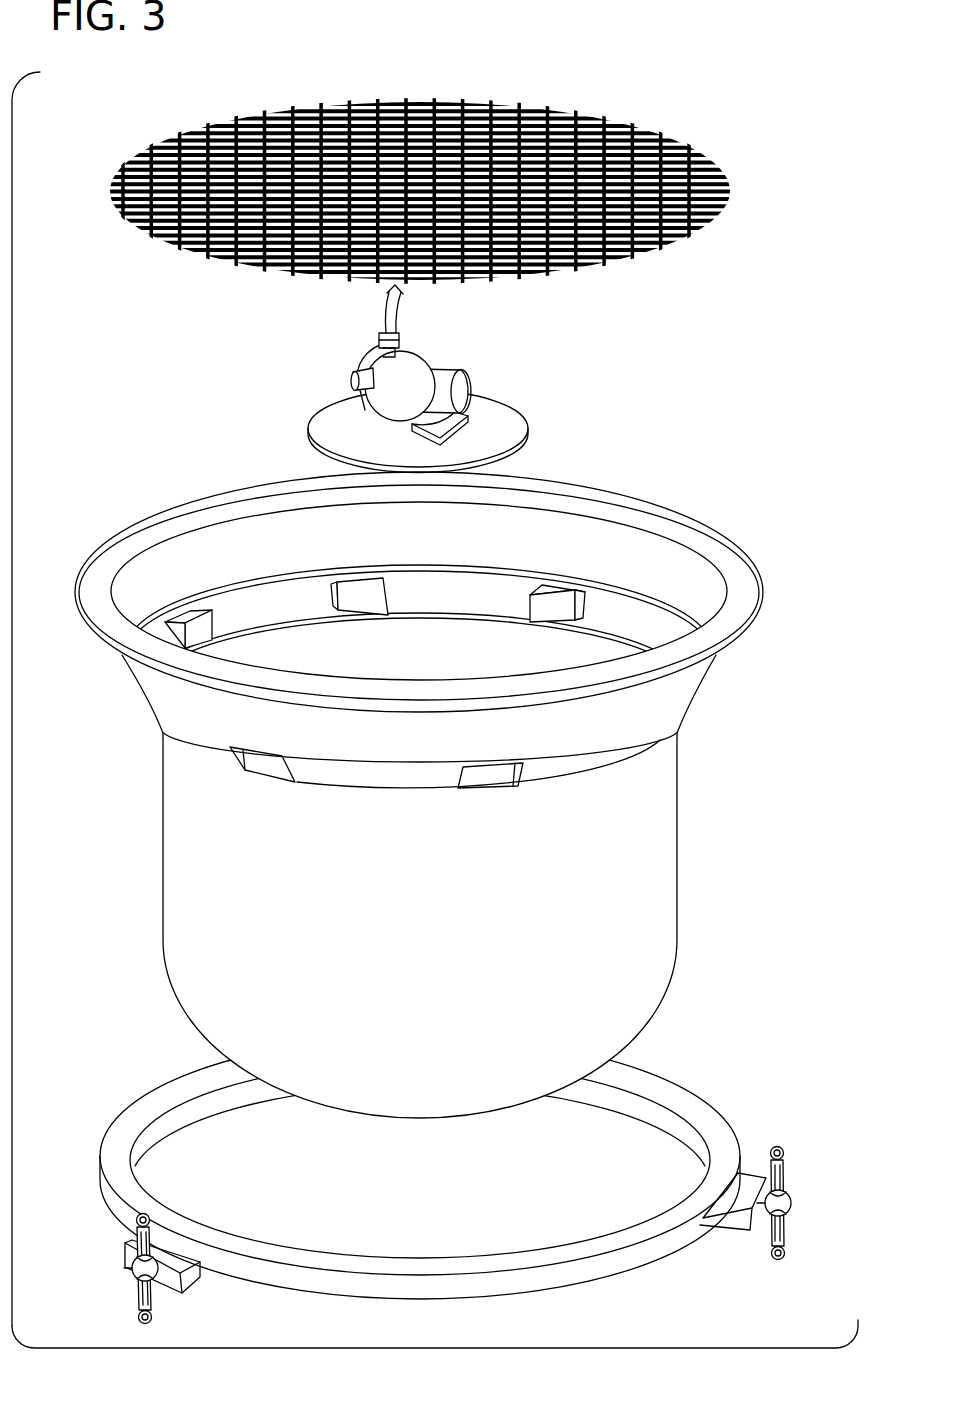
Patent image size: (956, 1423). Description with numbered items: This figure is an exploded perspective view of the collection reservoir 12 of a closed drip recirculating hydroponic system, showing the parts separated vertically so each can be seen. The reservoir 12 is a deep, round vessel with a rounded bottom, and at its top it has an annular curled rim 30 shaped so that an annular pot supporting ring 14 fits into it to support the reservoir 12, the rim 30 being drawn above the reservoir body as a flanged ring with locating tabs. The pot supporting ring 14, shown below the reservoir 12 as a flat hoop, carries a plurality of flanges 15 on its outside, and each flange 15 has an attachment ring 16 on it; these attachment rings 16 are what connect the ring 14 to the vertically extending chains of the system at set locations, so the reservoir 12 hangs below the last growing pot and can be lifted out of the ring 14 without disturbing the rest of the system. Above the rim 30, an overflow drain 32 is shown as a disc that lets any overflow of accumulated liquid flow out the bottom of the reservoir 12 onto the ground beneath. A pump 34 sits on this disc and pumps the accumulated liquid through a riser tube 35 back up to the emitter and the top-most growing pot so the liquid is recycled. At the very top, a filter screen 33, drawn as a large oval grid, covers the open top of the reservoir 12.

The collection reservoir 12 is at (692, 797).
The pot supporting ring 14 is at (708, 1077).
The flange 15 is at (734, 1218).
The attachment ring 16 is at (784, 1153).
The arcuate shaped rim 30 is at (767, 567).
The overflow drain 32 is at (500, 421).
The filter screen 33 is at (699, 138).
The pump 34 is at (437, 382).
The riser tube 35 is at (387, 317).